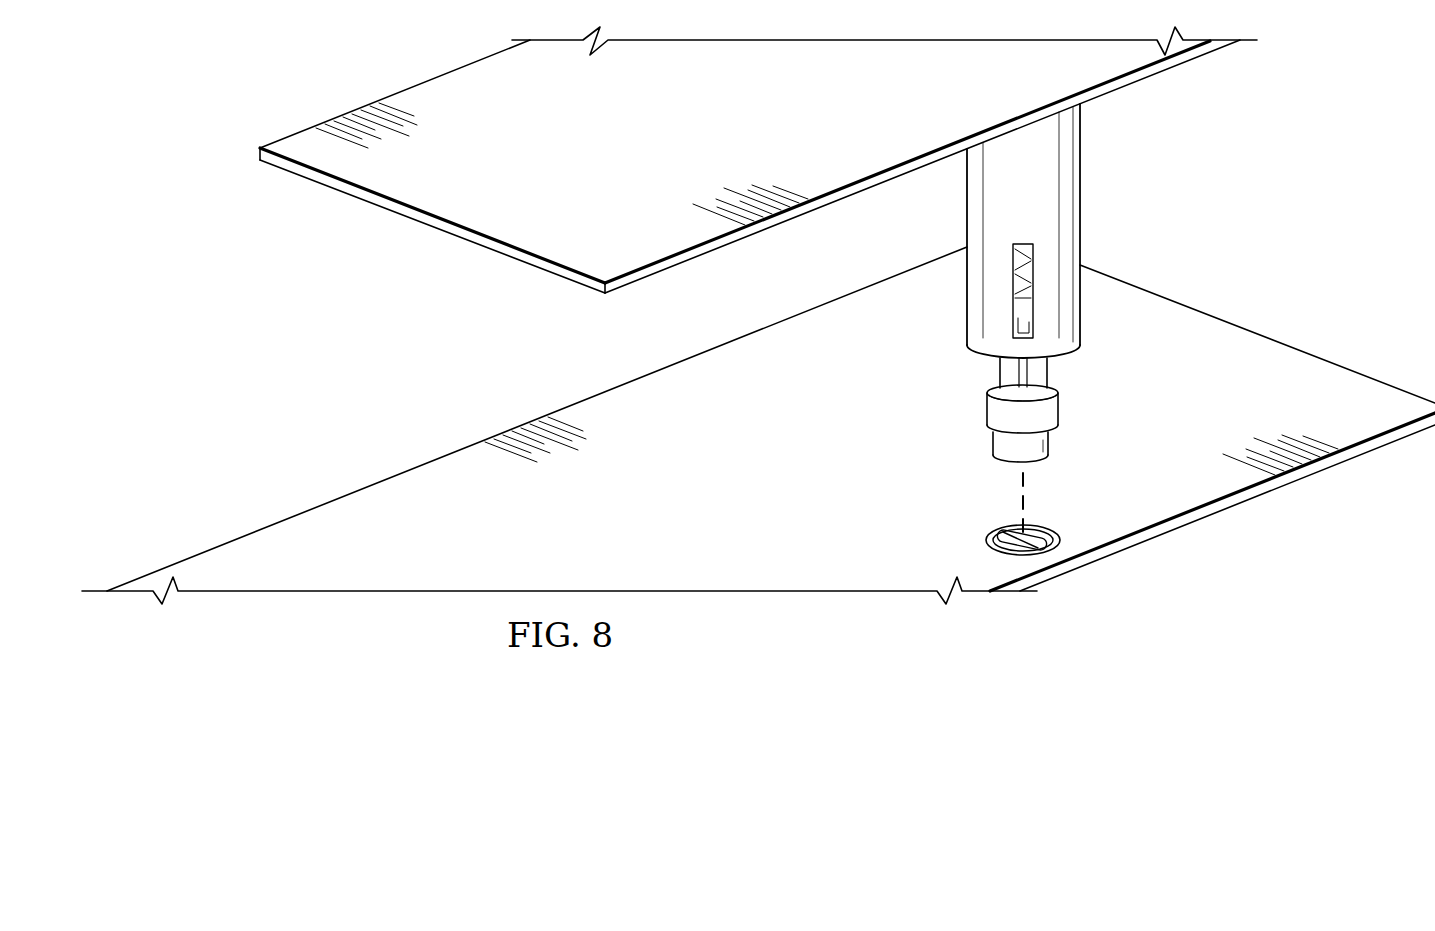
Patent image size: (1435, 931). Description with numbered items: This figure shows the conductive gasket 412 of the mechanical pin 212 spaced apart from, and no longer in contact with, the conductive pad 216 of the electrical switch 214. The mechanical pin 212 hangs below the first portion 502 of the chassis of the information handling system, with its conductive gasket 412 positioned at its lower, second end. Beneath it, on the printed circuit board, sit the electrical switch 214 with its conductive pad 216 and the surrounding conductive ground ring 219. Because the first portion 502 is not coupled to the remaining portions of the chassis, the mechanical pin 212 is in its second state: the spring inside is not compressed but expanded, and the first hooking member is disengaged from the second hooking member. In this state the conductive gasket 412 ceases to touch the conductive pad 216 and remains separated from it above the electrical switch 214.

The first portion of the chassis 502 is at (388, 91).
The mechanical pin 212 is at (1113, 346).
The conductive gasket 412 is at (1058, 444).
The electrical switch 214 is at (965, 488).
The conductive ground ring 219 is at (982, 541).
The conductive pad 216 is at (1052, 528).